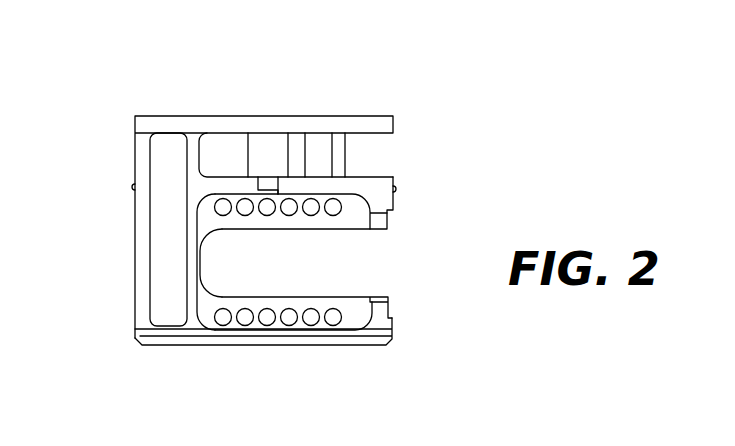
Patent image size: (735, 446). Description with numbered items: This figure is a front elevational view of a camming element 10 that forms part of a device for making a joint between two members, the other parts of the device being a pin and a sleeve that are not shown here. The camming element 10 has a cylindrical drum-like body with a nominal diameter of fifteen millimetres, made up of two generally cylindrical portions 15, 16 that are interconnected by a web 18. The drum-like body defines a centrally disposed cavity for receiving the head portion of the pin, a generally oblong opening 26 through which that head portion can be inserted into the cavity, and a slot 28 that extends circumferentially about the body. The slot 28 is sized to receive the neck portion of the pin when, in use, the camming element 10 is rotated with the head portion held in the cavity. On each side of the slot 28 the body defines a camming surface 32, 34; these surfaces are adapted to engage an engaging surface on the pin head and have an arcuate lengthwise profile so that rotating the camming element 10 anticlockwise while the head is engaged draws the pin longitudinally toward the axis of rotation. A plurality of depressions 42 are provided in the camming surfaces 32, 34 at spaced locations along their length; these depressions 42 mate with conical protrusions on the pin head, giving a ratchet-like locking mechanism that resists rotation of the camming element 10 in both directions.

The camming element 10 is at (380, 106).
The cylindrical portion 15 is at (222, 150).
The cylindrical portion 16 is at (377, 330).
The web 18 is at (165, 243).
The oblong opening 26 is at (218, 280).
The slot 28 is at (362, 257).
The camming surface 32 is at (358, 220).
The camming surface 34 is at (363, 307).
The depressions 42 is at (265, 321).